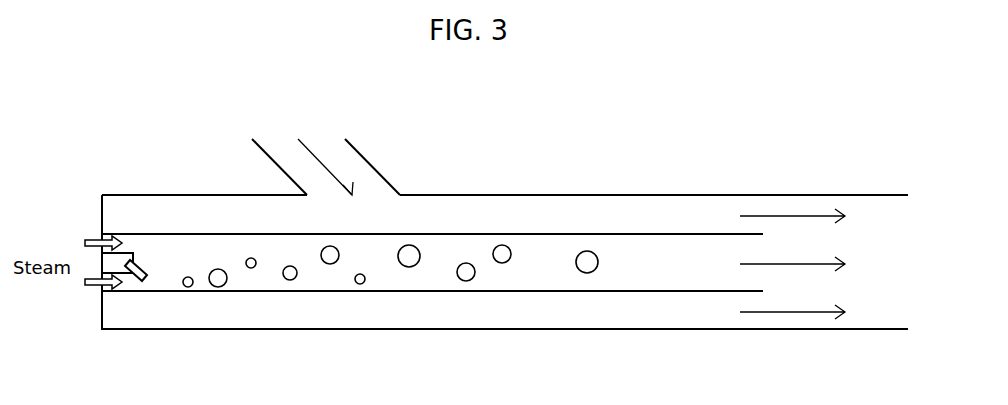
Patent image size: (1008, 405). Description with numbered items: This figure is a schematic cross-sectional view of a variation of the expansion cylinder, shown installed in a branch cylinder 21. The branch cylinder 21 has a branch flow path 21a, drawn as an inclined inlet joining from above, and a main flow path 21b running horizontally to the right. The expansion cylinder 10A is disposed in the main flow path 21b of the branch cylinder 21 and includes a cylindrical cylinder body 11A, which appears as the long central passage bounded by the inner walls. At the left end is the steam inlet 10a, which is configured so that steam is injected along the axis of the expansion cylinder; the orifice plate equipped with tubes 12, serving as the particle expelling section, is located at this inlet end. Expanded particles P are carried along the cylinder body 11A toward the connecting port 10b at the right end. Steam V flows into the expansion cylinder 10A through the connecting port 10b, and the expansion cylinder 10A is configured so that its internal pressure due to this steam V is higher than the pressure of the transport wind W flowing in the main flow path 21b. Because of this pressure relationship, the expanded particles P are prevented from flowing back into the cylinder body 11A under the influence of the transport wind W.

The steam inlet 10a is at (102, 238).
The connecting port 10b is at (763, 245).
The expansion cylinder 10A is at (255, 293).
The cylinder body 11A is at (205, 234).
The orifice plate equipped with tubes 12 is at (128, 253).
The branch cylinder 21 is at (472, 138).
The branch flow path 21a is at (373, 168).
The main flow path 21b is at (490, 195).
The expanded particles P is at (587, 250).
The transport wind W is at (785, 217).
The steam V is at (785, 265).